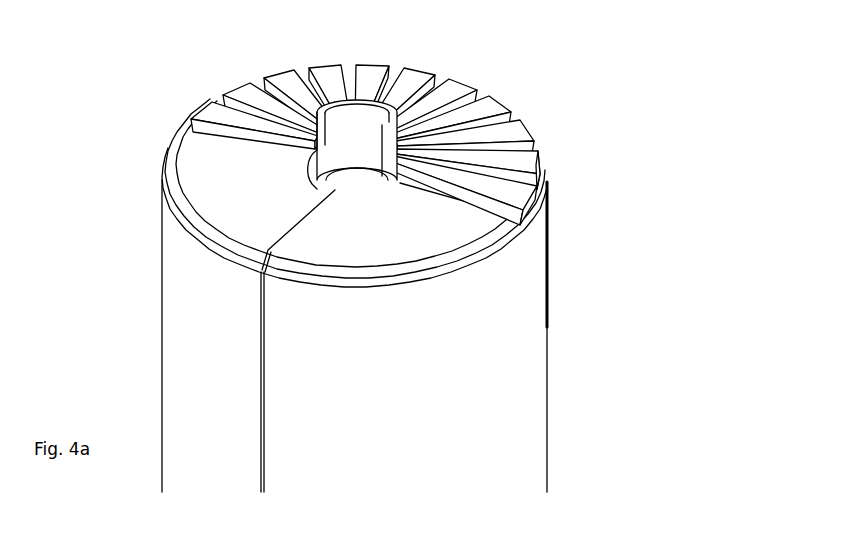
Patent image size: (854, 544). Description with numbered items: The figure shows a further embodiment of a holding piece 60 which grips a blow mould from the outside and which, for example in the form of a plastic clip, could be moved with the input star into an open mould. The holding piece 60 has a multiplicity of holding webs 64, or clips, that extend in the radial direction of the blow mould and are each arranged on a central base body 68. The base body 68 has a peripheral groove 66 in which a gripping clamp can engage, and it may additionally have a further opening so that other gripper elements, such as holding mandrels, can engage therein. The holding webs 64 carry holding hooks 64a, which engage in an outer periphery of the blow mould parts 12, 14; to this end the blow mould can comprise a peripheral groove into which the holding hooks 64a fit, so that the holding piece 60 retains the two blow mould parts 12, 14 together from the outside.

The blow mould part 12 is at (495, 328).
The blow mould part 14 is at (208, 323).
The holding piece 60 is at (383, 273).
The holding webs 64 is at (364, 145).
The holding hooks 64a is at (517, 212).
The peripheral groove 66 is at (317, 145).
The base body 68 is at (400, 118).